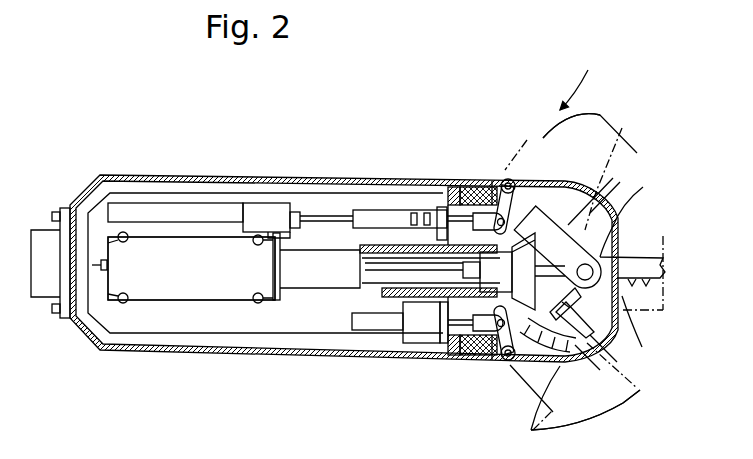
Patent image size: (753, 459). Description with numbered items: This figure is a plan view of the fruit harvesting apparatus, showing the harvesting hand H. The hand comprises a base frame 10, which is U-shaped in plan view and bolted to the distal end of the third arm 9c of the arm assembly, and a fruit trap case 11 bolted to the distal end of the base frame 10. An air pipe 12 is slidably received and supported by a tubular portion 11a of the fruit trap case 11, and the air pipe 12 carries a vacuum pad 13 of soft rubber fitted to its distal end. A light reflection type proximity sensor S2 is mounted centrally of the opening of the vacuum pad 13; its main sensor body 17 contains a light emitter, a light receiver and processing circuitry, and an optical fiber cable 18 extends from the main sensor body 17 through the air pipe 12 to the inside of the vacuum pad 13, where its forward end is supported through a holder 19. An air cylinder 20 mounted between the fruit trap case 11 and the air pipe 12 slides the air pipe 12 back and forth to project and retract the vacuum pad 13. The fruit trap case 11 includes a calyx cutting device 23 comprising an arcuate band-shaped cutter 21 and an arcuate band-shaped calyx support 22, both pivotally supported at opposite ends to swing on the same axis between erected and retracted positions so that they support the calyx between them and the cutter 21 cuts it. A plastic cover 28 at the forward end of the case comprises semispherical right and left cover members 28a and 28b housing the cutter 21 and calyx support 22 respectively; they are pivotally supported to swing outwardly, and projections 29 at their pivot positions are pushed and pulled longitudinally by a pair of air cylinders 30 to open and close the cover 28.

The base frame 10 is at (236, 176).
The third arm 9c is at (45, 288).
The air cylinder 20 is at (163, 208).
The main sensor body 17 is at (180, 300).
The proximity sensor S2 is at (191, 268).
The air pipe 12 is at (302, 285).
The optical fiber cable 18 is at (398, 250).
The tubular portion 11a is at (400, 297).
The air cylinders 30 is at (355, 210).
The holder 19 is at (457, 358).
The projections 29 is at (452, 186).
The calyx support 22 is at (640, 232).
The calyx cutting device 23 is at (643, 273).
The cutter 21 is at (642, 347).
The fruit trap case 11 is at (568, 223).
The harvesting hand H is at (581, 78).
The left cover member 28b is at (527, 140).
The right cover member 28a is at (575, 401).
The cover 28 is at (577, 272).
The vacuum pad 13 is at (623, 403).